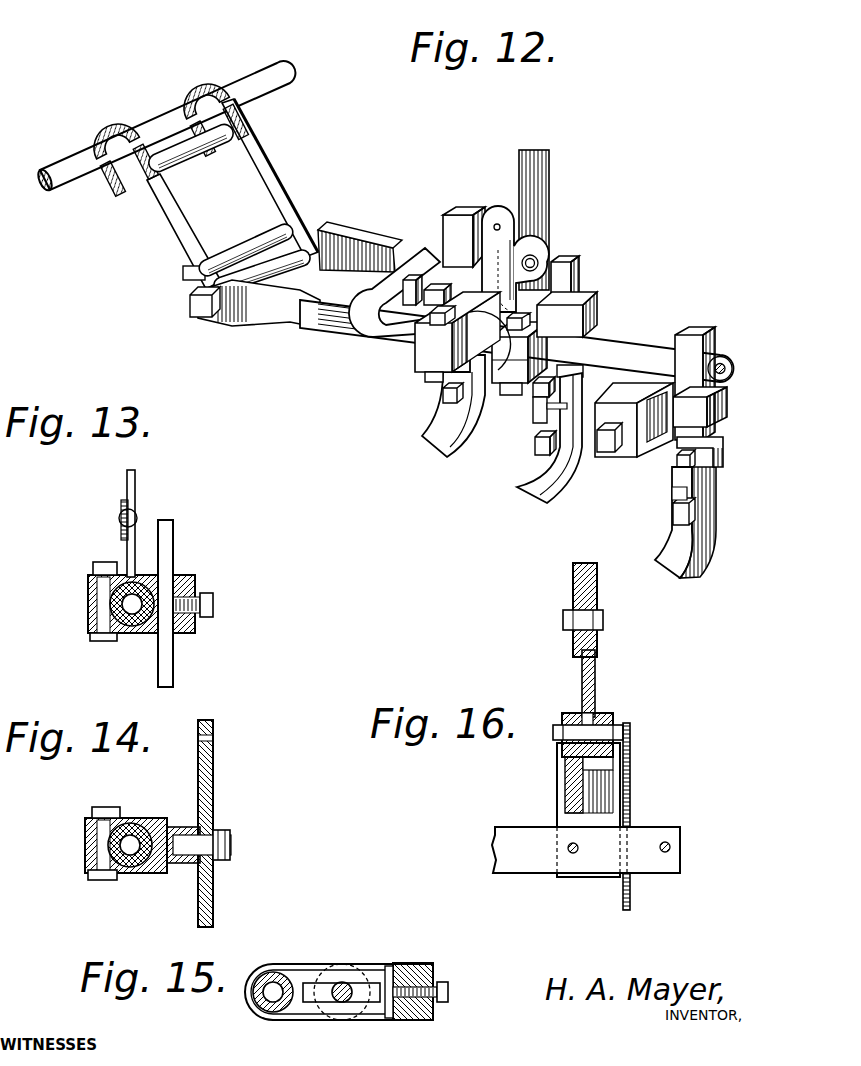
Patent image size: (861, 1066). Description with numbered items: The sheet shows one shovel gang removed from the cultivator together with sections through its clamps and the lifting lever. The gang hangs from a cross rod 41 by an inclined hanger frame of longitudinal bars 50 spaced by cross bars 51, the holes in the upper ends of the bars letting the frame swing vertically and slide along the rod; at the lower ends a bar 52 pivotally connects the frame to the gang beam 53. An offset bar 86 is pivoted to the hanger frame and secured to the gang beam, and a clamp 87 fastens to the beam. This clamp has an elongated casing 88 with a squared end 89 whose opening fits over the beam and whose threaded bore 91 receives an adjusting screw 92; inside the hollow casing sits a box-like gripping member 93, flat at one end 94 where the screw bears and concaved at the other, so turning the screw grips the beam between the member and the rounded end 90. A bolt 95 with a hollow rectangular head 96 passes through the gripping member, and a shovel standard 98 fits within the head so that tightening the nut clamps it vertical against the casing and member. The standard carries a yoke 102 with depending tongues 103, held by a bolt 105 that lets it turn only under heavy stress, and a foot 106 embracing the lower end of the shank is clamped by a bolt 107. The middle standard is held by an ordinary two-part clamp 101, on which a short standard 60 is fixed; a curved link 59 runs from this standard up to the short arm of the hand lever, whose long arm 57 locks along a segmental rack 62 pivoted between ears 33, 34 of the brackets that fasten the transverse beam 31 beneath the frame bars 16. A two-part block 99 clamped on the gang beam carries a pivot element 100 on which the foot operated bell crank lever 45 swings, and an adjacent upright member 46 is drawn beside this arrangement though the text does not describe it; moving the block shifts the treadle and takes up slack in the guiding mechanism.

In FIG. 12, the cross rod 41 is at (290, 72).
In FIG. 12, the longitudinal bars 50 is at (262, 178).
In FIG. 12, the cross bars 51 is at (182, 163).
In FIG. 12, the bar 52 is at (258, 305).
In FIG. 12, the offset bar 86 is at (339, 240).
In FIG. 15, the offset bar 86 is at (433, 980).
In FIG. 12, the clamp 87 is at (364, 283).
In FIG. 15, the clamp 87 is at (335, 965).
In FIG. 12, the rounded end 90 is at (347, 331).
In FIG. 15, the rounded end 90 is at (250, 985).
In FIG. 12, the gang beam 53 is at (637, 350).
In FIG. 13, the gang beam 53 is at (128, 630).
In FIG. 14, the gang beam 53 is at (130, 862).
In FIG. 15, the gang beam 53 is at (265, 1008).
In FIG. 12, the hollow rectangular head 96 is at (450, 273).
In FIG. 12, the standard 98 is at (470, 203).
In FIG. 13, the standard 98 is at (168, 528).
In FIG. 12, the arm 46 is at (533, 213).
In FIG. 14, the arm 46 is at (213, 762).
In FIG. 12, the curved link 59 is at (541, 167).
In FIG. 13, the curved link 59 is at (132, 480).
In FIG. 16, the curved link 59 is at (627, 788).
In FIG. 12, the two-part clamp 101 is at (603, 310).
In FIG. 13, the two-part clamp 101 is at (197, 582).
In FIG. 12, the two-part block 99 is at (430, 370).
In FIG. 14, the two-part block 99 is at (152, 817).
In FIG. 12, the depending tongue 103 is at (538, 410).
In FIG. 12, the bolt 107 is at (538, 444).
In FIG. 12, the foot 106 is at (565, 492).
In FIG. 12, the yoke 102 is at (677, 457).
In FIG. 12, the bolt 105 is at (722, 466).
In FIG. 13, the short standard 60 is at (122, 543).
In FIG. 14, the pivot element 100 is at (190, 843).
In FIG. 14, the foot operated bell crank lever 45 is at (217, 867).
In FIG. 16, the bars 16 is at (573, 787).
In FIG. 16, the long arm 57 is at (597, 598).
In FIG. 16, the segmental rack 62 is at (597, 685).
In FIG. 16, the ear 33 is at (563, 715).
In FIG. 16, the ear 34 is at (613, 718).
In FIG. 16, the transverse beam 31 is at (528, 863).
In FIG. 15, the box-like gripping member 93 is at (310, 1007).
In FIG. 15, the bolt 95 is at (345, 1003).
In FIG. 15, the threaded bore 91 is at (415, 1017).
In FIG. 15, the flat end 94 is at (387, 1007).
In FIG. 15, the elongated casing 88 is at (388, 963).
In FIG. 15, the squared end 89 is at (430, 965).
In FIG. 15, the adjusting screw 92 is at (448, 993).